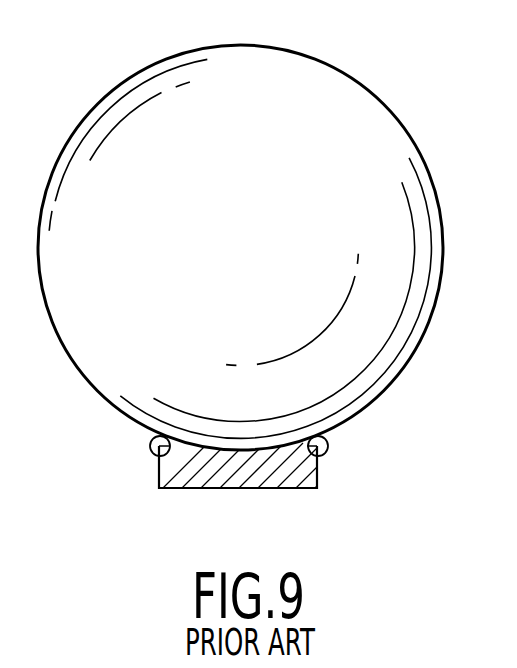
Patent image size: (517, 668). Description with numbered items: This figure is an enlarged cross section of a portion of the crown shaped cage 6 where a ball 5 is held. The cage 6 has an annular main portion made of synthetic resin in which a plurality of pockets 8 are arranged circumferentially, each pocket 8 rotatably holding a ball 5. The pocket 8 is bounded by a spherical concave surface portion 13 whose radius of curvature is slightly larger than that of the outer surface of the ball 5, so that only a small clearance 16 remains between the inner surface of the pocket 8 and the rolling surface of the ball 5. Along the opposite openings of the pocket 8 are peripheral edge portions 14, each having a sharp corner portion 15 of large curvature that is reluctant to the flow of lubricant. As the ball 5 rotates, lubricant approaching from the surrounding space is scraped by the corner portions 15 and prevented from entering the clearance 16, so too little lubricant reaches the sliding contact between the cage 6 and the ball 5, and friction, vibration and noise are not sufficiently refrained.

The ball 5 is at (367, 128).
The cage 6 is at (142, 480).
The pocket 8 is at (236, 448).
The spherical concave surface portion 13 is at (280, 447).
The peripheral edge portion 14 is at (148, 447).
The corner portion 15 is at (152, 451).
The clearance 16 is at (206, 448).